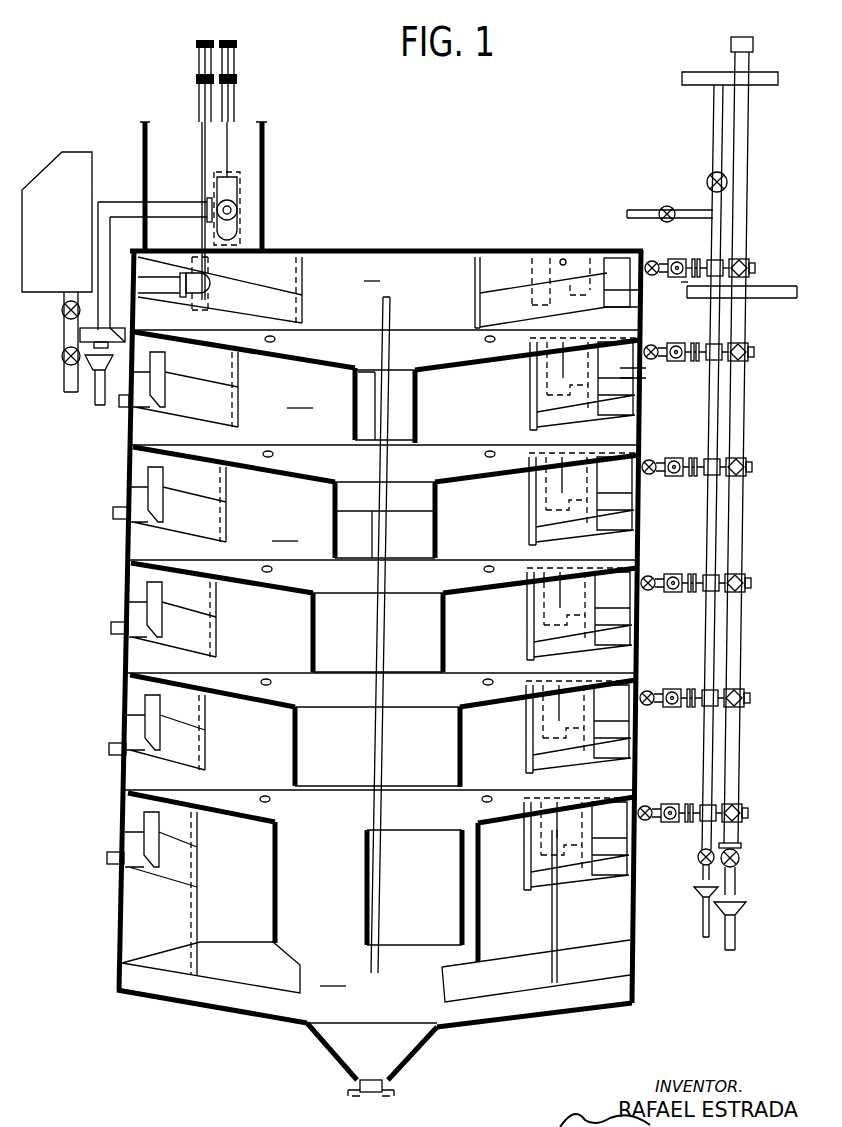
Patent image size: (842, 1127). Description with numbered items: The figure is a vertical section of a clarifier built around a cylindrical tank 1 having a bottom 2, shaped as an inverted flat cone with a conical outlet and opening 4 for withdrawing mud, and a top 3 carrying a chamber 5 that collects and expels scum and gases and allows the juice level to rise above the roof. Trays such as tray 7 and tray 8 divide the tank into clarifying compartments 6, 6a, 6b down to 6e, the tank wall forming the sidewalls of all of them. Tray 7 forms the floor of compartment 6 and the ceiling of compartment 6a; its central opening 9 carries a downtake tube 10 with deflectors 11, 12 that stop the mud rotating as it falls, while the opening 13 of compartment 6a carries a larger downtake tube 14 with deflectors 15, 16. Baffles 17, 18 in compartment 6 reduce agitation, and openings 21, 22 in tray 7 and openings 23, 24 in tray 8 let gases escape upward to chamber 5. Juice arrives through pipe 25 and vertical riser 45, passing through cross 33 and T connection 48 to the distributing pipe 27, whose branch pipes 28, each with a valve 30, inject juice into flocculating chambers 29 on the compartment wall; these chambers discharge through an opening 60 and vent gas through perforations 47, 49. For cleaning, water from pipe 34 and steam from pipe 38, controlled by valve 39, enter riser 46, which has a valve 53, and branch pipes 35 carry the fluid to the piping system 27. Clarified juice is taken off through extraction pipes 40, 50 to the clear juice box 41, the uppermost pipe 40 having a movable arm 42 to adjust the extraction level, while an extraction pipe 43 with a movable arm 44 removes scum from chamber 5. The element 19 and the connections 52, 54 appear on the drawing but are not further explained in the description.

The cylindrical tank 1 is at (120, 662).
The bottom 2 is at (200, 1010).
The top 3 is at (392, 251).
The opening 4 is at (368, 1090).
The chamber 5 is at (262, 190).
The compartment 6 is at (386, 294).
The compartment 6a is at (385, 415).
The compartment 6b is at (383, 539).
The compartment 6e is at (376, 971).
The tray 7 is at (339, 368).
The tray 8 is at (287, 476).
The opening 9 is at (392, 372).
The downtake tube 10 is at (417, 394).
The deflector 11 is at (354, 420).
The deflector 12 is at (400, 398).
The opening 13 is at (406, 480).
The downtake tube 14 is at (440, 500).
The deflector 15 is at (404, 514).
The deflector 16 is at (362, 524).
The baffle 17 is at (302, 304).
The baffle 18 is at (475, 312).
The distributor 19 is at (178, 382).
The opening 21 is at (276, 339).
The opening 22 is at (485, 340).
The opening 23 is at (274, 454).
The opening 24 is at (485, 456).
The pipe 25 is at (770, 299).
The distributing pipe 27 is at (686, 290).
The branch pipe 28 is at (678, 261).
The flocculating chamber 29 is at (614, 258).
The valve 30 is at (654, 261).
The cross 33 is at (756, 267).
The pipe 34 is at (712, 72).
The branch pipe 35 is at (718, 260).
The pipe 38 is at (646, 210).
The valve 39 is at (672, 201).
The extraction pipe 40 is at (82, 331).
The clear juice box 41 is at (58, 172).
The movable arm 42 is at (206, 287).
The extraction pipe 43 is at (128, 208).
The movable arm 44 is at (238, 213).
The vertical riser 45 is at (746, 176).
The riser 46 is at (714, 231).
The perforation 47 is at (584, 258).
The T connection 48 is at (740, 259).
The perforation 49 is at (621, 340).
The extraction pipe 50 is at (119, 404).
The inlet 52 is at (646, 373).
The valve 53 is at (712, 176).
The inlet 54 is at (640, 442).
The opening 60 is at (645, 318).